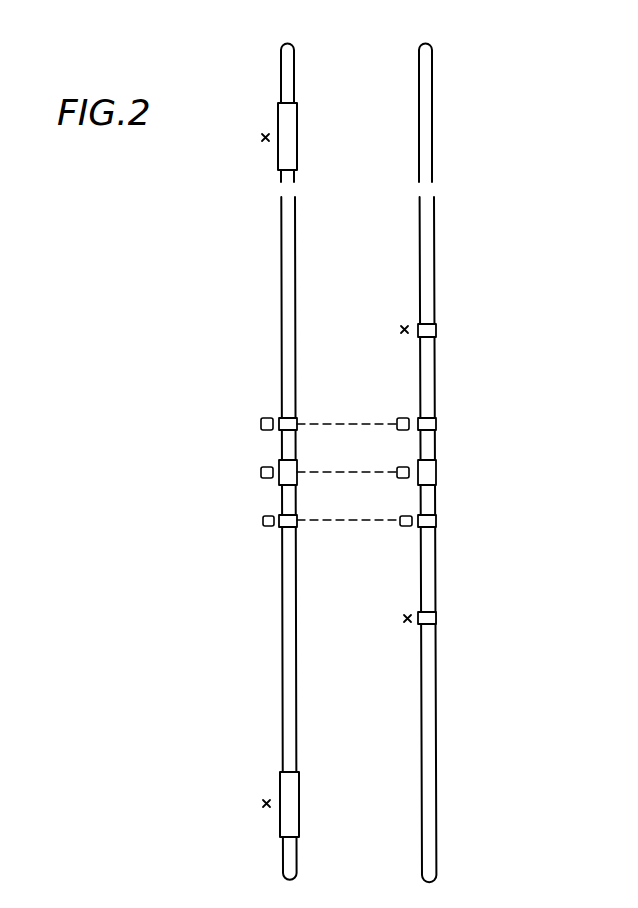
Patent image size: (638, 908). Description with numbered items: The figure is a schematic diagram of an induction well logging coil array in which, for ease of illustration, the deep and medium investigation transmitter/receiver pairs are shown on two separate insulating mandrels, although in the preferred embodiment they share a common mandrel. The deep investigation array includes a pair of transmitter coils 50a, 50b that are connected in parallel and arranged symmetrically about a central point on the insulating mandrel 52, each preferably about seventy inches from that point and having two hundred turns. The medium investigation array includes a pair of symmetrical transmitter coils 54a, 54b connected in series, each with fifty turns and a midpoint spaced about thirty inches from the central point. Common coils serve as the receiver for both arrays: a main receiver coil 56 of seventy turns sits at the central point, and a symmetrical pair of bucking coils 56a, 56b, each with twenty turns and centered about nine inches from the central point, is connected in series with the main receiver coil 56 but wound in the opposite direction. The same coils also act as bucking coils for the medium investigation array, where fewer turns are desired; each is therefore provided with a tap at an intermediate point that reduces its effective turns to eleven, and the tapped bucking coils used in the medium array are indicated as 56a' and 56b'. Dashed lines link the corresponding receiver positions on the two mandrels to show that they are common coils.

The insulating mandrel 52 is at (419, 93).
The deep transmitter coil 50a is at (297, 138).
The deep transmitter coil 50b is at (299, 803).
The medium transmitter coil 54a is at (436, 331).
The medium transmitter coil 54b is at (436, 618).
The bucking coil 56a is at (312, 405).
The tapped bucking coil 56a' is at (461, 409).
The main receiver coil 56 is at (282, 464).
The bucking coil 56b is at (311, 536).
The tapped bucking coil 56b' is at (463, 521).